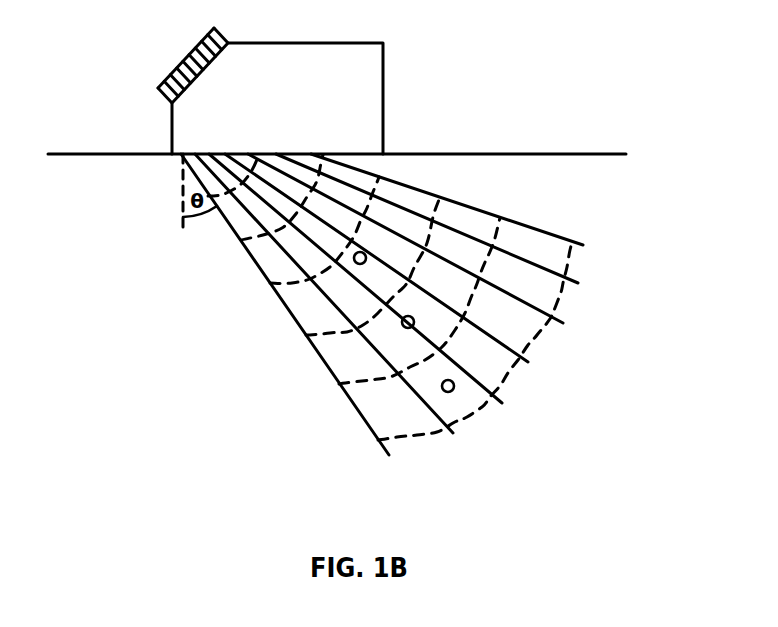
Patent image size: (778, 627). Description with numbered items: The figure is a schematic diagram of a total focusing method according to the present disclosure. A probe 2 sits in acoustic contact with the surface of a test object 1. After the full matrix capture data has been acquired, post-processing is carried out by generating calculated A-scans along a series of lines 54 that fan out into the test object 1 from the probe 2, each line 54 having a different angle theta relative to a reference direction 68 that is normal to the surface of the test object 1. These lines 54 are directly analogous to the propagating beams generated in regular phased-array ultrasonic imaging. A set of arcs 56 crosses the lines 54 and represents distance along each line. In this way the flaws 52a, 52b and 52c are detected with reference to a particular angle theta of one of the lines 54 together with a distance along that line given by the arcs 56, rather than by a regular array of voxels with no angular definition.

The test object 1 is at (577, 176).
The probe 2 is at (362, 82).
The reference direction 68 is at (182, 184).
The line 54 is at (358, 412).
The arcs 56 is at (544, 332).
The flaw 52a is at (353, 262).
The flaw 52b is at (401, 323).
The flaw 52c is at (455, 387).